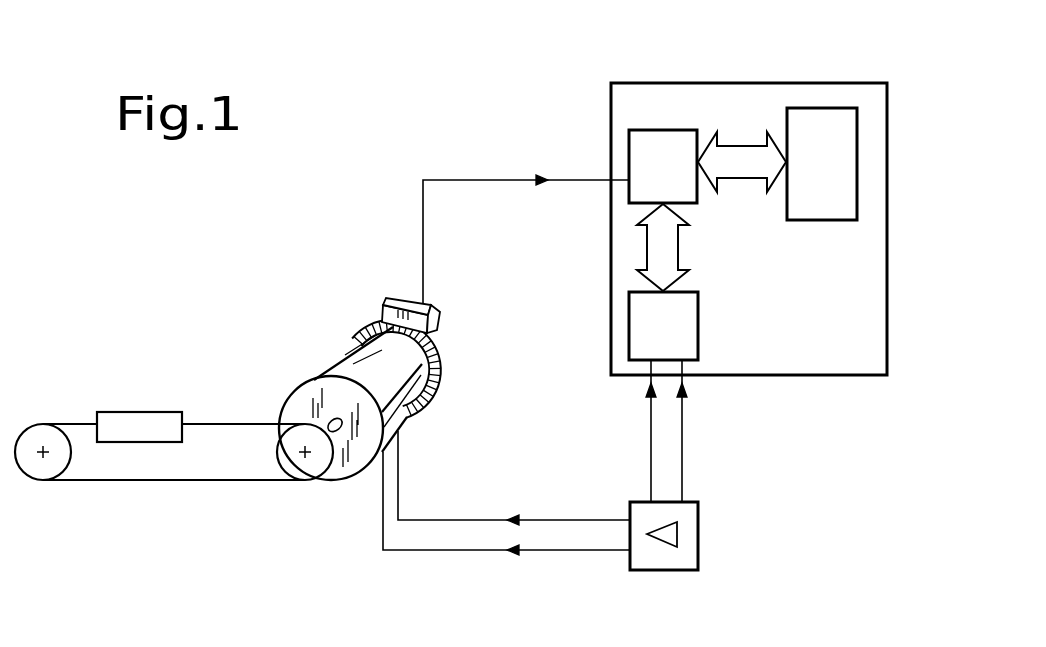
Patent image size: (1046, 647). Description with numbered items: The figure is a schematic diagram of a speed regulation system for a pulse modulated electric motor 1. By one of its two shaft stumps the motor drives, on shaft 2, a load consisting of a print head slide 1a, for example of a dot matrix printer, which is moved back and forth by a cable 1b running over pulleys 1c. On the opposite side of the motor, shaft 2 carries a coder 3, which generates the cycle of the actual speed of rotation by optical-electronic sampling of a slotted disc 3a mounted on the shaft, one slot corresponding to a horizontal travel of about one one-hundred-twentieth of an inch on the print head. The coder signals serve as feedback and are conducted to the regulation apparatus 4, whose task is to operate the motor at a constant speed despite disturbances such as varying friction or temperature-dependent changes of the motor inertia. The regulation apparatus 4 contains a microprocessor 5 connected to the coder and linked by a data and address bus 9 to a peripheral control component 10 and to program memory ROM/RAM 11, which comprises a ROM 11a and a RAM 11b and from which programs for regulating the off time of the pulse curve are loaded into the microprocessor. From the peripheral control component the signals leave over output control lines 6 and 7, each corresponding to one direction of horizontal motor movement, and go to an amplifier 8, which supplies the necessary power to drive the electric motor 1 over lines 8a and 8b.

The pulse modulated electric motor 1 is at (330, 367).
The print head slide 1a is at (135, 435).
The cable 1b is at (221, 423).
The pulleys 1c is at (37, 470).
The shaft 2 is at (333, 433).
The coder 3 is at (402, 298).
The slotted disc 3a is at (458, 360).
The regulation apparatus 4 is at (855, 375).
The microprocessor 5 is at (651, 128).
The output control line 6 is at (683, 482).
The output control line 7 is at (652, 460).
The amplifier 8 is at (674, 563).
The line 8a is at (553, 520).
The line 8b is at (598, 550).
The data and address bus 9 is at (648, 245).
The peripheral control component 10 is at (698, 328).
The ROM/RAM 11 is at (817, 110).
The ROM 11a is at (852, 125).
The RAM 11b is at (850, 167).